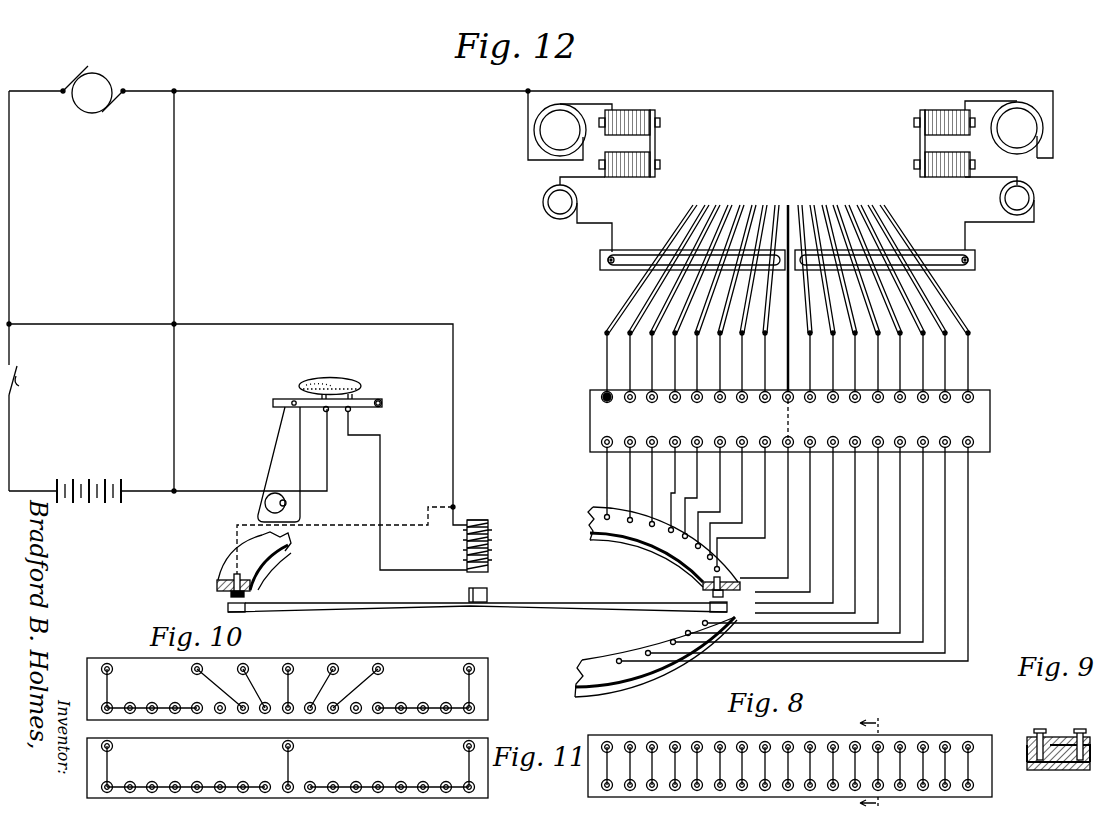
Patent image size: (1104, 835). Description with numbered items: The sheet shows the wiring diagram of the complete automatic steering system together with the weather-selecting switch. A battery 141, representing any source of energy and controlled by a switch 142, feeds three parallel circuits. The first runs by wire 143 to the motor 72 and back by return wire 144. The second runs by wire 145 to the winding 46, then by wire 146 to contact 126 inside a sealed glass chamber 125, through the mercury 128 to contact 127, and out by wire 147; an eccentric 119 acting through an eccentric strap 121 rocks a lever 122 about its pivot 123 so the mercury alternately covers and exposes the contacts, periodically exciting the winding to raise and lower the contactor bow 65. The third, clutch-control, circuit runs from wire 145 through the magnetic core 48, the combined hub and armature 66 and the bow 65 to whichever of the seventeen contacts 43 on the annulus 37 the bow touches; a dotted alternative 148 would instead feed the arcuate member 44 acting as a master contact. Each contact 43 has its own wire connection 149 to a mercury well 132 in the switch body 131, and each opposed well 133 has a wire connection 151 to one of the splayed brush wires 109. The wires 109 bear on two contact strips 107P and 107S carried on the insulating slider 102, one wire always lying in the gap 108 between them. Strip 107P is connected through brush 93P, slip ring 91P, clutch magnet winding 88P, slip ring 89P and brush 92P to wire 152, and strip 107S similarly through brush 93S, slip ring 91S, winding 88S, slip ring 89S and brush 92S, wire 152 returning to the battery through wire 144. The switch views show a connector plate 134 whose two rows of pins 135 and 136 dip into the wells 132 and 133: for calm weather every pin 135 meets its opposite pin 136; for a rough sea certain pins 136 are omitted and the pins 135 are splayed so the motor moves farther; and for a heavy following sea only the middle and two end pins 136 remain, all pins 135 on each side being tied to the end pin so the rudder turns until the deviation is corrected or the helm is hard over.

In FIG. 12, the motor 72 is at (96, 78).
In FIG. 12, the wire 152 is at (315, 93).
In FIG. 12, the wire 143 is at (9, 195).
In FIG. 12, the return wire 144 is at (174, 254).
In FIG. 12, the wire 145 is at (366, 326).
In FIG. 12, the switch 142 is at (30, 380).
In FIG. 12, the battery 141 is at (91, 505).
In FIG. 12, the wire 147 is at (228, 491).
In FIG. 12, the eccentric strap 121 is at (270, 443).
In FIG. 12, the eccentric 119 is at (264, 505).
In FIG. 12, the lever 122 is at (280, 400).
In FIG. 12, the sealed glass chamber 125 is at (330, 379).
In FIG. 12, the mercury 128 is at (350, 380).
In FIG. 12, the pivot 123 is at (383, 403).
In FIG. 12, the contact 126 is at (352, 411).
In FIG. 12, the contact 127 is at (327, 412).
In FIG. 12, the wire 146 is at (380, 560).
In FIG. 12, the dotted-line connection 148 is at (396, 525).
In FIG. 12, the winding 46 is at (490, 553).
In FIG. 12, the magnetic core 48 is at (488, 520).
In FIG. 12, the combined hub and armature 66 is at (488, 594).
In FIG. 12, the contactor bow 65 is at (592, 604).
In FIG. 12, the arcuate member 44 is at (230, 594).
In FIG. 12, the contacts 43 is at (712, 594).
In FIG. 12, the annulus 37 is at (283, 548).
In FIG. 12, the slip ring 89P is at (540, 124).
In FIG. 12, the brush 92P is at (570, 160).
In FIG. 12, the bi-polar electro-magnet 88P is at (650, 155).
In FIG. 12, the slip ring 91P is at (540, 203).
In FIG. 12, the brush 93P is at (558, 230).
In FIG. 12, the slip ring 89S is at (1022, 103).
In FIG. 12, the brush 92S is at (1040, 145).
In FIG. 12, the bi-polar electro-magnet 88S is at (943, 172).
In FIG. 12, the slip ring 91S is at (1034, 194).
In FIG. 12, the brush 93S is at (1034, 218).
In FIG. 12, the slider 102 is at (636, 256).
In FIG. 12, the contact strip 107P is at (608, 270).
In FIG. 12, the contact strip 107S is at (960, 270).
In FIG. 12, the gap 108 is at (788, 270).
In FIG. 12, the brush wires 109 is at (806, 206).
In FIG. 12, the wire connection 151 is at (947, 355).
In FIG. 12, the body 131 is at (977, 420).
In FIG. 9, the body 131 is at (1027, 748).
In FIG. 12, the mercury wells 133 is at (990, 399).
In FIG. 9, the mercury wells 133 is at (1062, 766).
In FIG. 12, the mercury wells 132 is at (972, 448).
In FIG. 9, the mercury wells 132 is at (1032, 765).
In FIG. 12, the wire connection 149 is at (947, 530).
In FIG. 10, the connector plate 134 is at (432, 660).
In FIG. 11, the connector plate 134 is at (287, 768).
In FIG. 8, the connector plate 134 is at (690, 745).
In FIG. 9, the connector plate 134 is at (1058, 740).
In FIG. 10, the pins 135 is at (175, 703).
In FIG. 11, the pins 135 is at (243, 782).
In FIG. 8, the pins 135 is at (628, 790).
In FIG. 9, the pins 135 is at (1040, 728).
In FIG. 10, the pins 136 is at (107, 664).
In FIG. 11, the pins 136 is at (113, 748).
In FIG. 8, the pins 136 is at (966, 742).
In FIG. 9, the pins 136 is at (1082, 728).